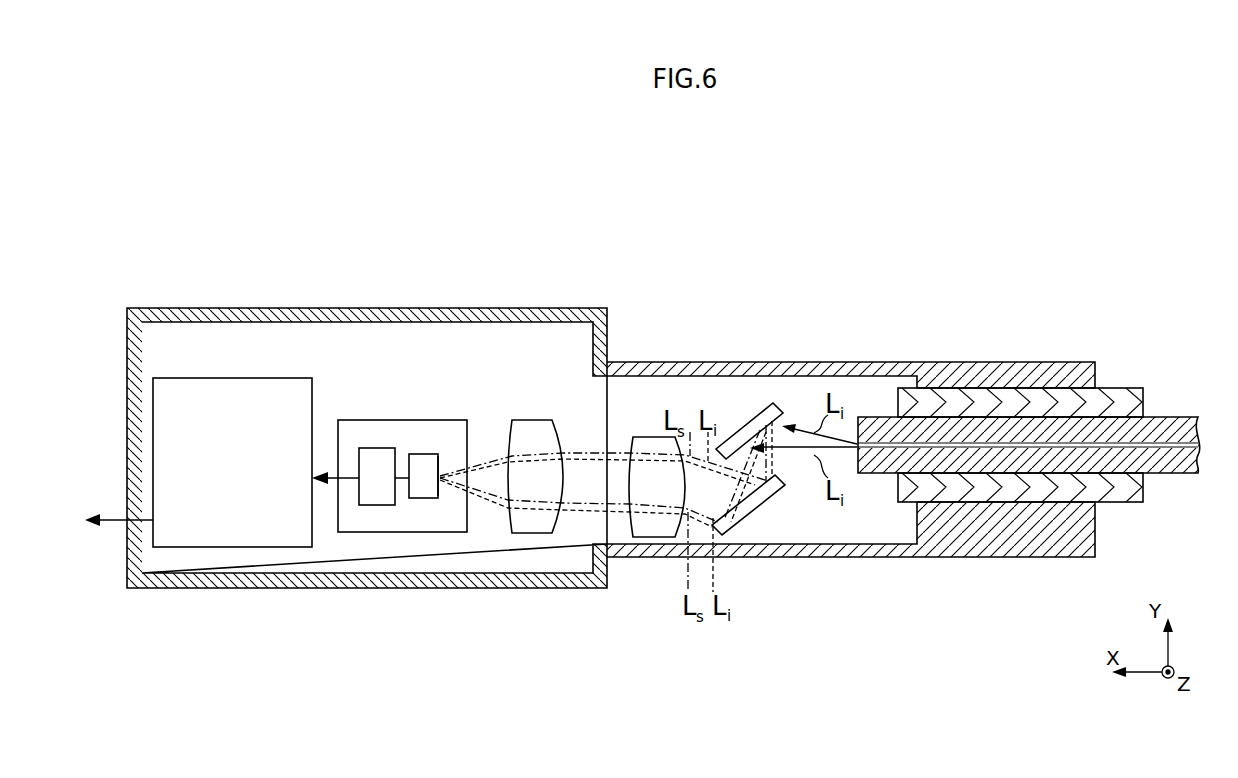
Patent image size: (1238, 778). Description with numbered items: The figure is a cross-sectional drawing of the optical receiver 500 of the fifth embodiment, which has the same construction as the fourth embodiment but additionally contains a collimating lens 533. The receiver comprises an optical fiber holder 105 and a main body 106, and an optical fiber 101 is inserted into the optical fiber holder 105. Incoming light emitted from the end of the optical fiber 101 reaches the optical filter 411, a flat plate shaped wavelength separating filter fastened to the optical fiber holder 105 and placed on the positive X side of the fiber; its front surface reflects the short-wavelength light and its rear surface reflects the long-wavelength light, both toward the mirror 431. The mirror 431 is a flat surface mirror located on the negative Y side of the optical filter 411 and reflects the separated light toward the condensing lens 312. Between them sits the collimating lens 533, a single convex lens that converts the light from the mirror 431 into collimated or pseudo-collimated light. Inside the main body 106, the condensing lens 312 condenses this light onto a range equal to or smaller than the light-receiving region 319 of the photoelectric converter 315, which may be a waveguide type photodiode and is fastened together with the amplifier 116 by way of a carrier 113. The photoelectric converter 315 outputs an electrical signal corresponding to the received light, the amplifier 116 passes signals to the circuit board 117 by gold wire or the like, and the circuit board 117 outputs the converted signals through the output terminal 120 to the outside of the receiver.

The main body 106 is at (180, 307).
The circuit board 117 is at (235, 378).
The amplifier 116 is at (373, 448).
The photoelectric converter 315 is at (418, 454).
The light-receiving region 319 is at (447, 472).
The carrier 113 is at (468, 420).
The condensing lens 312 is at (538, 420).
The collimating lens 533 is at (650, 537).
The optical filter 411 is at (763, 410).
The mirror 431 is at (757, 508).
The output terminal 120 is at (120, 522).
The optical fiber holder 105 is at (1043, 362).
The optical fiber 101 is at (1160, 417).
The optical receiver 500 is at (1114, 229).